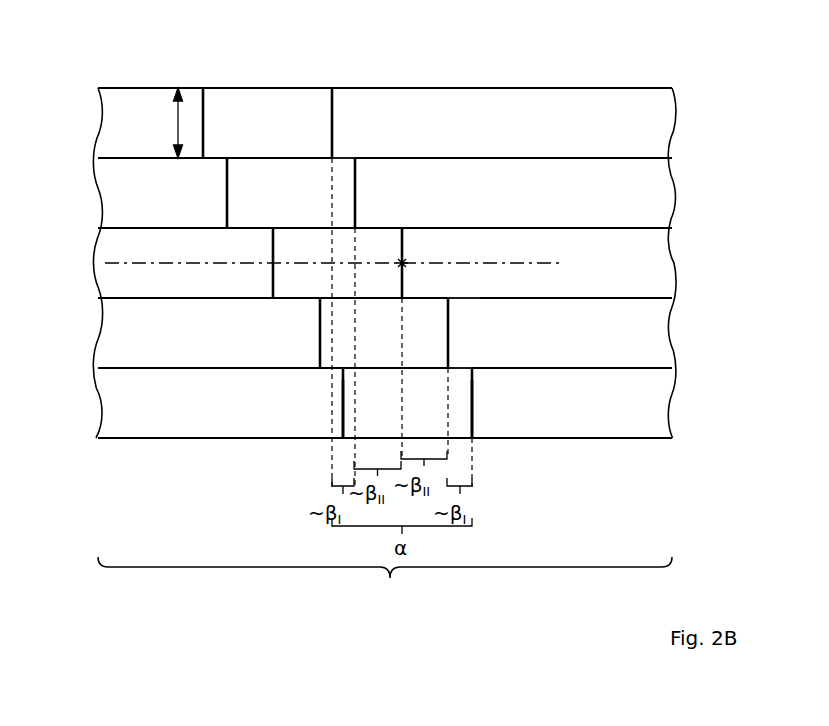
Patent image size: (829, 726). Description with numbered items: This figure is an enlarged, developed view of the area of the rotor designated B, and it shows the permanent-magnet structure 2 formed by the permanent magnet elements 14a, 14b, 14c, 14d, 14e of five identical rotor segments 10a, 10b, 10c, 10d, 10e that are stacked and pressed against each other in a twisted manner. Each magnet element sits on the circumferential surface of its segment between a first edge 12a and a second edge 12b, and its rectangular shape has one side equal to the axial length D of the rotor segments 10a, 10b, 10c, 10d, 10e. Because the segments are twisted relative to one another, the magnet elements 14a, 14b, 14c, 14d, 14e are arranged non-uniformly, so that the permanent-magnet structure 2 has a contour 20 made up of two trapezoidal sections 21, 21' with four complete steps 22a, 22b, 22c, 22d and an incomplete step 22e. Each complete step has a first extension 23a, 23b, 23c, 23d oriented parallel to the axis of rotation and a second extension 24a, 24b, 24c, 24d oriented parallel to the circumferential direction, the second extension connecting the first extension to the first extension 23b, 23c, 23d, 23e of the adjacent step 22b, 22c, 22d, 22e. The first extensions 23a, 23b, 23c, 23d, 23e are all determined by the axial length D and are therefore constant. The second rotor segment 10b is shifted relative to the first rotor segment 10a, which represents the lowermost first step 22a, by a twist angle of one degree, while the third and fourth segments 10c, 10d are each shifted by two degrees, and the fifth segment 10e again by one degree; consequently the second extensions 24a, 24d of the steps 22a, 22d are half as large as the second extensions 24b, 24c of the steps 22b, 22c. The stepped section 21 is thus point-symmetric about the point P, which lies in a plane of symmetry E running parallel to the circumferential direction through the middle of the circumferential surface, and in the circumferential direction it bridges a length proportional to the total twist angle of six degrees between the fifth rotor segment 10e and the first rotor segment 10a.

The permanent-magnet structure 2 is at (236, 72).
The first rotor segment 10a is at (650, 418).
The second rotor segment 10b is at (650, 346).
The third rotor segment 10c is at (650, 276).
The fourth rotor segment 10d is at (650, 206).
The fifth rotor segment 10e is at (650, 136).
The first edge 12a is at (133, 87).
The second edge 12b is at (151, 160).
The permanent magnet element 14a is at (399, 434).
The permanent magnet element 14b is at (397, 341).
The permanent magnet element 14c is at (320, 294).
The permanent magnet element 14d is at (270, 196).
The permanent magnet element 14e is at (245, 124).
The contour 20 is at (292, 352).
The trapezoidal section 21 is at (511, 427).
The trapezoidal section 21' is at (305, 424).
The first step 22a is at (494, 380).
The second step 22b is at (469, 310).
The third step 22c is at (423, 240).
The fourth step 22d is at (383, 170).
The incomplete step 22e is at (351, 100).
The first extension 23a is at (473, 403).
The first extension 23b is at (448, 318).
The first extension 23c is at (400, 242).
The first extension 23d is at (355, 185).
The first extension 23e is at (332, 105).
The second extension 24a is at (460, 368).
The second extension 24b is at (423, 298).
The second extension 24c is at (378, 228).
The second extension 24d is at (345, 158).
The axial length D is at (170, 123).
The plane of symmetry E is at (108, 264).
The center of symmetry P is at (400, 266).
The area of the rotor B is at (385, 586).